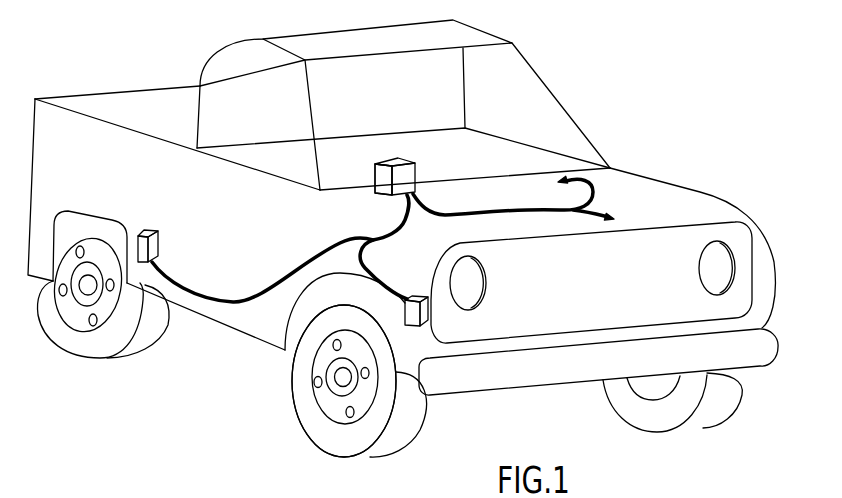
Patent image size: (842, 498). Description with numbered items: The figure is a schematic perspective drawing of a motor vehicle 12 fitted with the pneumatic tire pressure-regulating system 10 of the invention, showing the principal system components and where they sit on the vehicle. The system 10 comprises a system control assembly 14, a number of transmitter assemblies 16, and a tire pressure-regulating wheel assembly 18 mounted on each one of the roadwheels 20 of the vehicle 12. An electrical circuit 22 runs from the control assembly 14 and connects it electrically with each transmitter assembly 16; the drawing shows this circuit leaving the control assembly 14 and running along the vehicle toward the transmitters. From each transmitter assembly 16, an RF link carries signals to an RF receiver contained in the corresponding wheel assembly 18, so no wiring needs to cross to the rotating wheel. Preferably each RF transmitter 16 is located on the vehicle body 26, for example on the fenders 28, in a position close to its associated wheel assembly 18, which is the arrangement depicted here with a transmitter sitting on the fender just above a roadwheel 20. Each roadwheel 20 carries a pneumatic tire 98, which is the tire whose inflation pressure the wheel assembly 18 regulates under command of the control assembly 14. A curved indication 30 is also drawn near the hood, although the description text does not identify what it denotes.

The pneumatic tire pressure-regulating system 10 is at (379, 150).
The motor vehicle 12 is at (703, 190).
The system control assembly 14 is at (411, 162).
The transmitter assembly 16 is at (429, 317).
The tire pressure-regulating wheel assembly 18 is at (312, 404).
The roadwheel 20 is at (432, 417).
The electrical circuit 22 is at (318, 252).
The vehicle body 26 is at (247, 334).
The fender 28 is at (381, 291).
The air flow arrows 30 is at (560, 163).
The pneumatic tire 98 is at (341, 446).